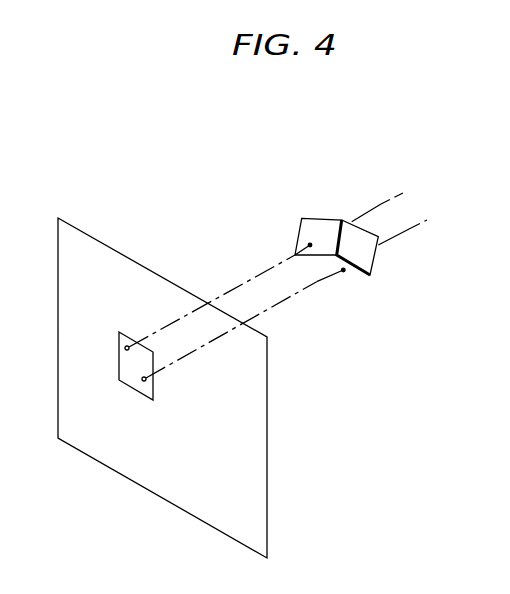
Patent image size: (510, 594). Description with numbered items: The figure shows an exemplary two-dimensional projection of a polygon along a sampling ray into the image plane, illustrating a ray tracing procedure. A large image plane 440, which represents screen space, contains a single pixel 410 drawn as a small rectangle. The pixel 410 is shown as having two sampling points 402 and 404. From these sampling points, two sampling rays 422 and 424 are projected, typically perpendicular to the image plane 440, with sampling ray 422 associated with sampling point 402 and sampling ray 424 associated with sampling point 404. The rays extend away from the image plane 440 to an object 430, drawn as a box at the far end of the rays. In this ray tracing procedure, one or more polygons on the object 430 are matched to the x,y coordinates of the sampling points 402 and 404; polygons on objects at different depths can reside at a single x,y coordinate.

The sampling point 402 is at (126, 347).
The sampling point 404 is at (147, 383).
The pixel 410 is at (133, 388).
The sampling ray 422 is at (257, 273).
The sampling ray 424 is at (300, 293).
The object 430 is at (335, 220).
The image plane 440 is at (267, 459).